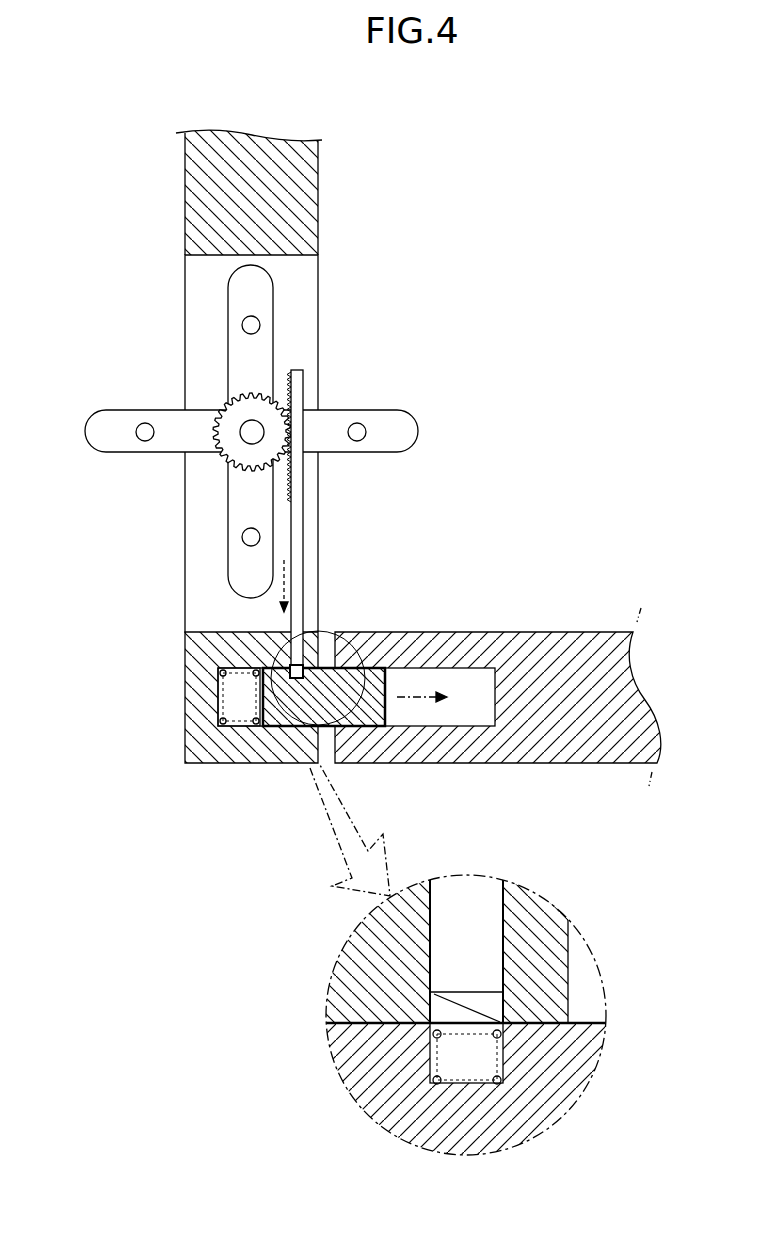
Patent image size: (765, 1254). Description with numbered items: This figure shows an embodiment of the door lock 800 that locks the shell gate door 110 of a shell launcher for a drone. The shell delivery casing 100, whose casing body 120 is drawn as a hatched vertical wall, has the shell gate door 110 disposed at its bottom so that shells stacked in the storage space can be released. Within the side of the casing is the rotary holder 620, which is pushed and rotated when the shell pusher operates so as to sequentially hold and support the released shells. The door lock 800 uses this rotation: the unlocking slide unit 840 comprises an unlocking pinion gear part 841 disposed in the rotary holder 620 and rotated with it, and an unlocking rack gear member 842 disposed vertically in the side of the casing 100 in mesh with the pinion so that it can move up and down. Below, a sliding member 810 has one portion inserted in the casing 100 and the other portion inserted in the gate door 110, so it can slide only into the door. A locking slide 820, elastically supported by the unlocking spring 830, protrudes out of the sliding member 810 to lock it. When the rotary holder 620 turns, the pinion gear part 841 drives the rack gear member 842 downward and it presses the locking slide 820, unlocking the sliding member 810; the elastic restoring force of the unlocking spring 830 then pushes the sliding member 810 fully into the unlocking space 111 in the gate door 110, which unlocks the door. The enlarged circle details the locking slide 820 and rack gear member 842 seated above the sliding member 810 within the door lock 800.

The shell delivery casing 100 is at (198, 383).
The casing body 120 is at (205, 210).
The rotary holder 620 is at (227, 410).
The shell gate door 110 is at (538, 752).
The unlocking space 111 is at (437, 716).
The door lock 800 is at (447, 765).
The sliding member 810 is at (388, 646).
The locking slide 820 is at (294, 664).
The unlocking spring 830 is at (458, 632).
The unlocking slide unit 840 is at (416, 523).
The unlocking pinion gear part 841 is at (288, 453).
The unlocking rack gear member 842 is at (292, 456).